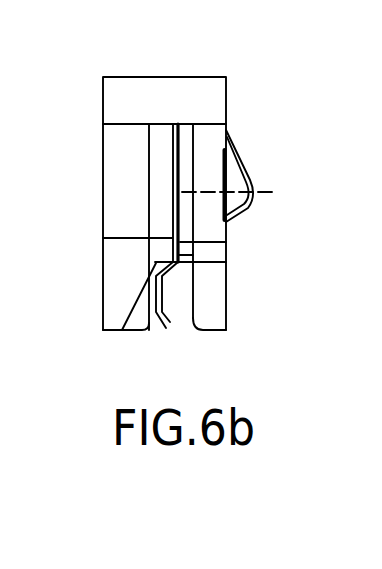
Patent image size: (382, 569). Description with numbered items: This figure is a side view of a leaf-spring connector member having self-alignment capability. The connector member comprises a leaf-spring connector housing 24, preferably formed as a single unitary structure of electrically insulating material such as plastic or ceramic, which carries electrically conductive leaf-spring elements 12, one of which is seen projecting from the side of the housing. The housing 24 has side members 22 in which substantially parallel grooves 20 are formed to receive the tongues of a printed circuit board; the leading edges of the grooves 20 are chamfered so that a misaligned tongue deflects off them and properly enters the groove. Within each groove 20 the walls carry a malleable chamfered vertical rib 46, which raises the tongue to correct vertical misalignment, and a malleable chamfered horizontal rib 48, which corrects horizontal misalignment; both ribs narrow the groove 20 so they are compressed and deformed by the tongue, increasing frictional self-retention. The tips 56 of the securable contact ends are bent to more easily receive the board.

The electrically conductive leaf-spring element 12 is at (246, 160).
The groove 20 is at (183, 320).
The side member 22 is at (118, 88).
The leaf-spring connector housing 24 is at (104, 163).
The vertical rib 46 is at (161, 206).
The horizontal rib 48 is at (226, 242).
The tip 56 is at (166, 325).